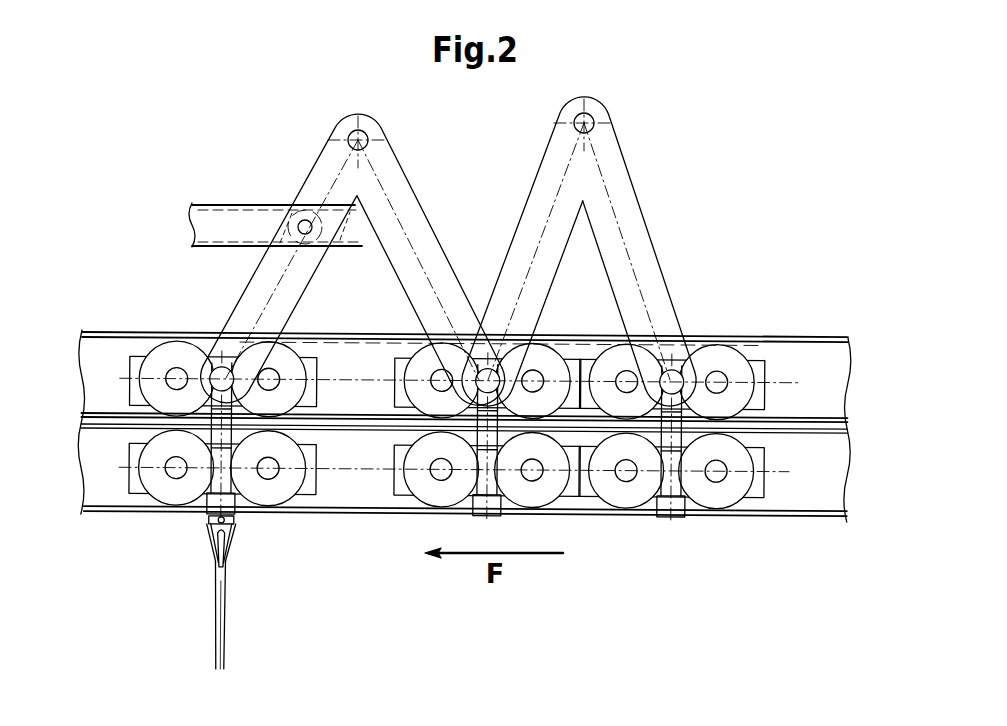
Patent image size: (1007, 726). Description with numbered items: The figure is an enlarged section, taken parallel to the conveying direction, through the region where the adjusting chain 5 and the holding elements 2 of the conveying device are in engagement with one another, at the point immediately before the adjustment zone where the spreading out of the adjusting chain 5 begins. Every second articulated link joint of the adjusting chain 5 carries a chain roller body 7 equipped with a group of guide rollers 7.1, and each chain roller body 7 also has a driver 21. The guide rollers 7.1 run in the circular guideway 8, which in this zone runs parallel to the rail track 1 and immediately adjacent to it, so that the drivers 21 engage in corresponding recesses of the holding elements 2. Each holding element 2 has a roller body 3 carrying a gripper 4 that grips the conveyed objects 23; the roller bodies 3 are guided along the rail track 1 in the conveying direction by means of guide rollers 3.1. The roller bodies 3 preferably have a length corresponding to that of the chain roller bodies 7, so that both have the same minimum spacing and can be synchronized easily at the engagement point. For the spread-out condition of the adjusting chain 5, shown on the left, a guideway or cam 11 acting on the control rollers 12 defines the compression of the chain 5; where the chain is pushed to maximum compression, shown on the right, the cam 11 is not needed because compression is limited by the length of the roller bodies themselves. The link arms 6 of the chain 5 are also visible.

The rail track 1 is at (807, 487).
The holding element 2 is at (157, 527).
The roller body 3 is at (310, 481).
The guide rollers 3.1 is at (708, 497).
The gripper 4 is at (207, 527).
The adjusting chain 5 is at (624, 251).
The link arm 6 is at (589, 260).
The chain roller body 7 is at (135, 341).
The guide rollers 7.1 is at (712, 341).
The circular guideway 8 is at (768, 335).
The guideway or cam 11 is at (238, 207).
The control rollers 12 is at (303, 218).
The driver 21 is at (233, 432).
The objects 23 is at (218, 600).